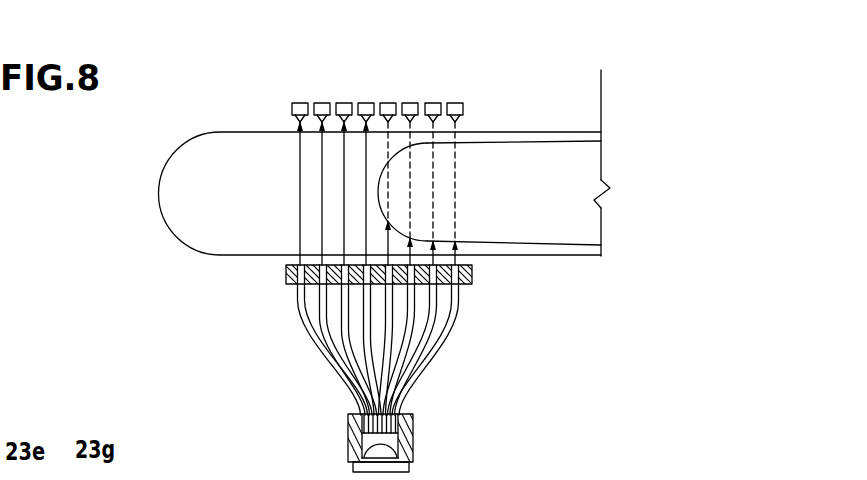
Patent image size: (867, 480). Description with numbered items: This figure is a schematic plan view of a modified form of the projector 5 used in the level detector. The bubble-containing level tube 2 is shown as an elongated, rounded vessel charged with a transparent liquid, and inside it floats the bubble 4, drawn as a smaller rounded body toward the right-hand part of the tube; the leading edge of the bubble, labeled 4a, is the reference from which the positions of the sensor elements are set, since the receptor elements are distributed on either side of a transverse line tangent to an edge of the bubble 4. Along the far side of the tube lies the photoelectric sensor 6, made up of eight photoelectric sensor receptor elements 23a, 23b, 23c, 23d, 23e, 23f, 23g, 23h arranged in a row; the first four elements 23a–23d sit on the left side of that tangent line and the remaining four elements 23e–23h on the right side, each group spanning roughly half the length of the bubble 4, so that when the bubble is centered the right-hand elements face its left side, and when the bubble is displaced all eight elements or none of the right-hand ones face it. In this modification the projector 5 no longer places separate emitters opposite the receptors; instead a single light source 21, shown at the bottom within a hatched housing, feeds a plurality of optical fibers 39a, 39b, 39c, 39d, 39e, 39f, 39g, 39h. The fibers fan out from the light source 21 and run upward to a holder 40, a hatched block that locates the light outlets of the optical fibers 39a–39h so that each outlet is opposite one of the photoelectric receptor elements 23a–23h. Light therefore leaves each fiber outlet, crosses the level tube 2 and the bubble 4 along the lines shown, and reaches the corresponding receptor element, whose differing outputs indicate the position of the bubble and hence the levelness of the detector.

The bubble-containing level tube 2 is at (379, 175).
The bubble 4 is at (568, 175).
The distal end of inner body 4a is at (378, 192).
The projector 5 is at (278, 302).
The photoelectric sensor 6 is at (470, 104).
The light source 21 is at (390, 452).
The photoelectric sensor receptor element 23a is at (263, 163).
The photoelectric sensor receptor element 23b is at (318, 102).
The photoelectric sensor receptor element 23c is at (327, 134).
The photoelectric sensor receptor element 23d is at (368, 102).
The photoelectric sensor receptor element 23e is at (389, 102).
The photoelectric sensor receptor element 23f is at (412, 102).
The photoelectric sensor receptor element 23g is at (435, 102).
The photoelectric sensor receptor element 23h is at (493, 157).
The optical fiber 39a is at (298, 308).
The optical fiber 39b is at (321, 320).
The optical fiber 39c is at (352, 332).
The optical fiber 39d is at (370, 345).
The optical fiber 39e is at (393, 296).
The optical fiber 39f is at (413, 310).
The optical fiber 39g is at (432, 336).
The optical fiber 39h is at (430, 369).
The holder 40 is at (286, 274).